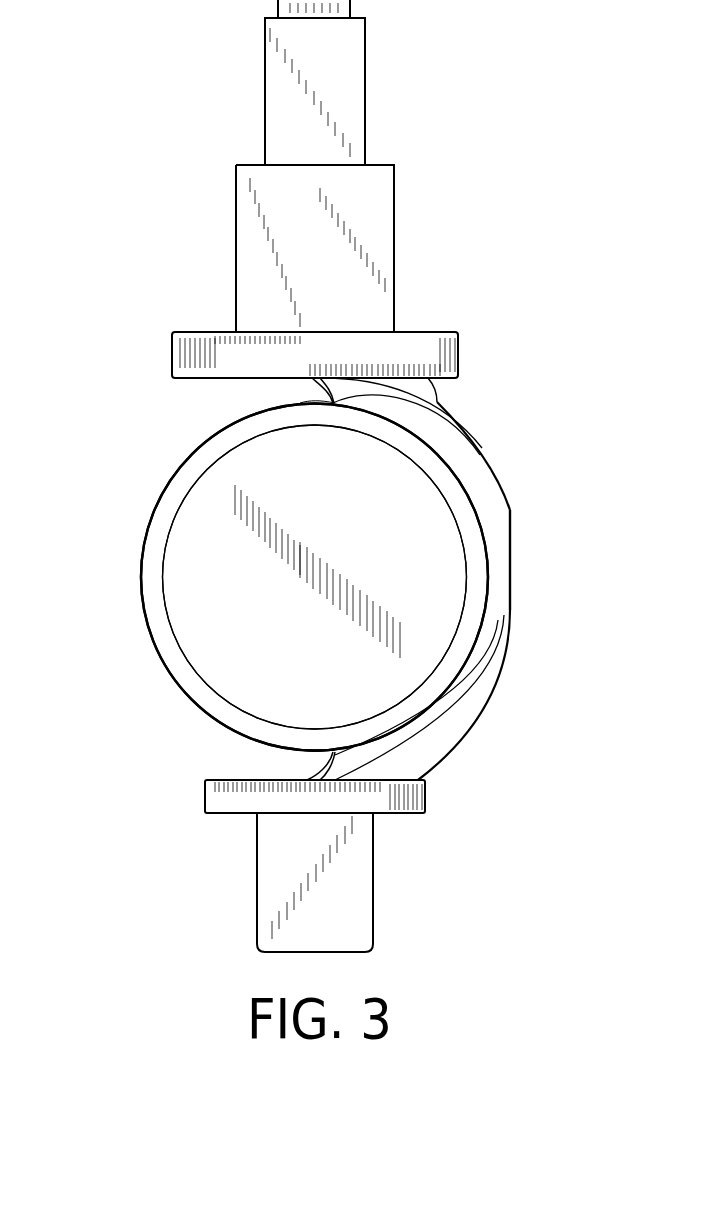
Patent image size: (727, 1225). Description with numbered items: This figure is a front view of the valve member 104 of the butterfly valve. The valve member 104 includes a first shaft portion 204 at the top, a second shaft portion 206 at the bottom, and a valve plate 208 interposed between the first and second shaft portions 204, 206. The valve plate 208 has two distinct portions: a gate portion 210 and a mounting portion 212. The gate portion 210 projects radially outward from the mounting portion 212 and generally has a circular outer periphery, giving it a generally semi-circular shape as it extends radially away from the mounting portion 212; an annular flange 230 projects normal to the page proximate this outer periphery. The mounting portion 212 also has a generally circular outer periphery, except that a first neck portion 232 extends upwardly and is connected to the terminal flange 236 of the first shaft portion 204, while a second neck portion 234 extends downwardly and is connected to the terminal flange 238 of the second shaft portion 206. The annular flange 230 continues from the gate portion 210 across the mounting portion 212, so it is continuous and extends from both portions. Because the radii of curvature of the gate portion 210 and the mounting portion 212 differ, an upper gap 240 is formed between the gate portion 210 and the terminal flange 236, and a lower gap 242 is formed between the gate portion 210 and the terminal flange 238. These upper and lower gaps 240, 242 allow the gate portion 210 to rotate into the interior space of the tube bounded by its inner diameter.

The valve member 104 is at (158, 96).
The first shaft portion 204 is at (394, 240).
The second shaft portion 206 is at (257, 872).
The valve plate 208 is at (137, 651).
The gate portion 210 is at (218, 517).
The mounting portion 212 is at (425, 563).
The annular flange 230 is at (143, 543).
The first neck portion 232 is at (420, 423).
The second neck portion 234 is at (430, 755).
The terminal flange 236 is at (427, 342).
The terminal flange 238 is at (385, 808).
The upper gap 240 is at (227, 402).
The lower gap 242 is at (245, 758).